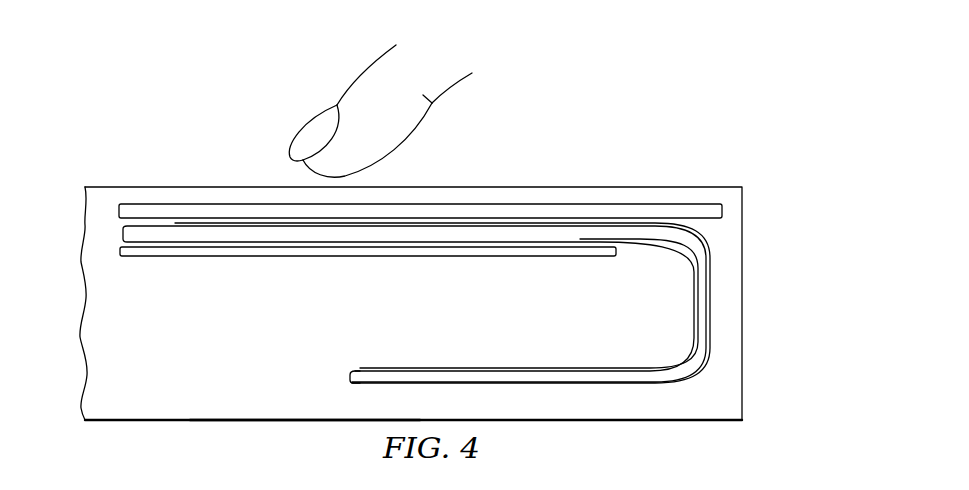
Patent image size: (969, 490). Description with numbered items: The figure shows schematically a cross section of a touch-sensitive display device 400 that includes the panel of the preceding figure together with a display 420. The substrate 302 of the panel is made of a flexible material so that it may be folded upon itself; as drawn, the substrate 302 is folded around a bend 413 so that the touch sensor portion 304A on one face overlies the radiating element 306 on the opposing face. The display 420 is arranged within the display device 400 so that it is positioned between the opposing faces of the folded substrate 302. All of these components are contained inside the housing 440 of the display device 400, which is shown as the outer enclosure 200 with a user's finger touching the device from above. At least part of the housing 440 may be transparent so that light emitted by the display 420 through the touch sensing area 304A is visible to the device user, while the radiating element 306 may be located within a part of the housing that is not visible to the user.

The electronic device housing 200 is at (720, 289).
The touch-sensitive display device 400 is at (569, 140).
The substrate 302 is at (122, 233).
The cover layer 304A is at (172, 220).
The radiating element 306 is at (449, 355).
The fold of flexible circuit 413 is at (703, 378).
The display 420 is at (320, 256).
The housing 440 is at (202, 420).